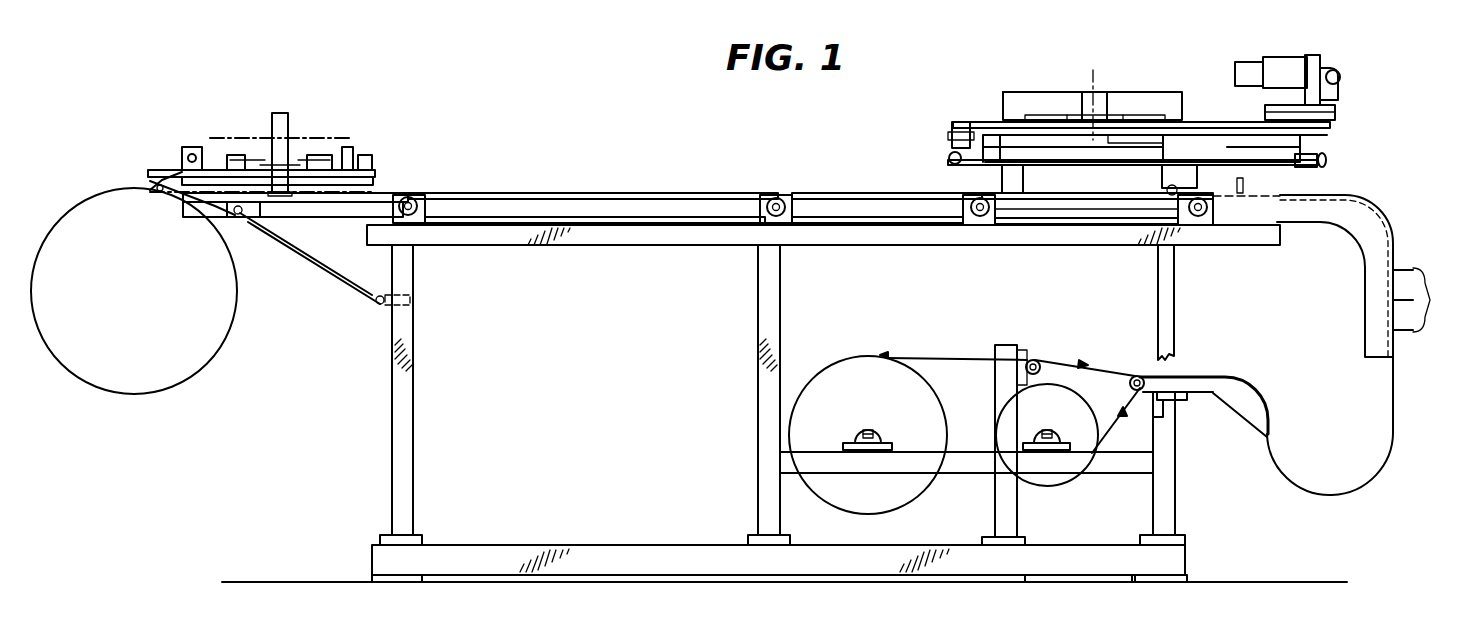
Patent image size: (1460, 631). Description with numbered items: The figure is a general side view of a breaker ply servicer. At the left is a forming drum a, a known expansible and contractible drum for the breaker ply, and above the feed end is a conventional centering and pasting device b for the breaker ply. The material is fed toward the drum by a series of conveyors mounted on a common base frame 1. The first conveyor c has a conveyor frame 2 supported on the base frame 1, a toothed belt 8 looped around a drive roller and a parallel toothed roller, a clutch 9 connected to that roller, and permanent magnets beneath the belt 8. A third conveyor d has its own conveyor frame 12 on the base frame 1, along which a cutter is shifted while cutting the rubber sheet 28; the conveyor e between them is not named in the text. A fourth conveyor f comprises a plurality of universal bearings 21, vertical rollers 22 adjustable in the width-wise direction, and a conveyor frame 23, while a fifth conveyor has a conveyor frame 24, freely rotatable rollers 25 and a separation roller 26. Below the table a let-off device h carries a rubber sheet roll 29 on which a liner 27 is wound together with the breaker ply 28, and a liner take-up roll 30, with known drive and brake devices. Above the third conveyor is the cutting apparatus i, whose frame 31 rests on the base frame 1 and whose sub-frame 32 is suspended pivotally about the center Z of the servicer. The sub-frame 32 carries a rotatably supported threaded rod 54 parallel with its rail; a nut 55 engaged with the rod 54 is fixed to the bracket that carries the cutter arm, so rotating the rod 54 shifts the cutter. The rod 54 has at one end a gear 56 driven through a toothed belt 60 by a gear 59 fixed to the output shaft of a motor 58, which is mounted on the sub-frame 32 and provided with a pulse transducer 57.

The common base frame 1 is at (527, 545).
The conveyor frame 2 is at (593, 218).
The toothed belt 8 is at (645, 193).
The conveyor frame 12 is at (1091, 216).
The clutch 9 is at (1280, 386).
The universal bearings 21 is at (1374, 206).
The vertical rollers 22 is at (1426, 300).
The conveyor frame 23 is at (1364, 283).
The conveyor frame 24 is at (1240, 410).
The freely rotatable rollers 25 is at (1238, 377).
The separation roller 26 is at (1132, 389).
The liner 27 is at (1111, 425).
The rubber sheet 28 is at (1289, 489).
The rubber sheet roll 29 is at (854, 368).
The liner take-up roll 30 is at (1073, 479).
The frame 31 is at (1040, 92).
The sub-frame 32 is at (1205, 122).
The threaded rod 54 is at (986, 144).
The nut 55 is at (1244, 164).
The gear 56 is at (1321, 158).
The pulse transducer 57 is at (1253, 62).
The motor 58 is at (1288, 60).
The gear 59 is at (1340, 72).
The toothed belt 60 is at (1338, 100).
The forming drum a is at (236, 338).
The centering and pasting device b is at (296, 135).
The first conveyor c is at (573, 173).
The third conveyor d is at (1076, 192).
The intermediate conveyor e is at (857, 188).
The fourth conveyor f is at (1300, 330).
The let-off device h is at (971, 406).
The cutting apparatus i is at (1119, 82).
The center of the servicer Z is at (1092, 89).